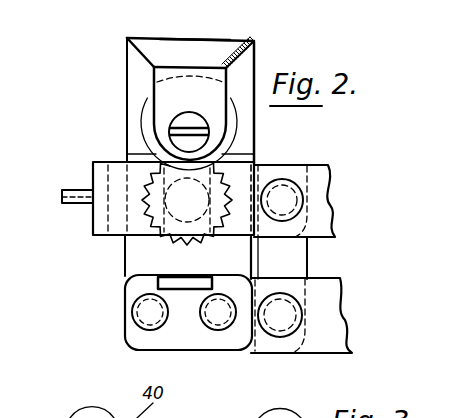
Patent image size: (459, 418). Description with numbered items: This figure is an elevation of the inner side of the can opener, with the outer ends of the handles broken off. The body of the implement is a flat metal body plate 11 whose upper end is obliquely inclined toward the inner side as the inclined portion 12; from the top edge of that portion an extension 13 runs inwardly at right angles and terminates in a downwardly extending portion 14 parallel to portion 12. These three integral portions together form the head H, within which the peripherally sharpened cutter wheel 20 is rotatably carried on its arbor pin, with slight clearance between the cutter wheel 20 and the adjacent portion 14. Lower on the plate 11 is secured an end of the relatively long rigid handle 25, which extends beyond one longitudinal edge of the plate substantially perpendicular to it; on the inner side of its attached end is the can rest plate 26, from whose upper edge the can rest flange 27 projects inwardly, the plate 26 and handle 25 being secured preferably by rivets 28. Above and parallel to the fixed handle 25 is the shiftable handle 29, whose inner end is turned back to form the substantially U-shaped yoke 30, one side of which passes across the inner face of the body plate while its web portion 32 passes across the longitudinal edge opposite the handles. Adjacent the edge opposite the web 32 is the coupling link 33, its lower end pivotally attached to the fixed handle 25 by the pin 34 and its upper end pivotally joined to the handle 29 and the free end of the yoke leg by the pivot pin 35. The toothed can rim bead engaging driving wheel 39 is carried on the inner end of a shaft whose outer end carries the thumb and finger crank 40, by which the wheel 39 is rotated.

The head H is at (210, 35).
The body plate 11 is at (138, 260).
The inclined portion 12 is at (254, 127).
The extension 13 is at (232, 47).
The downwardly extending portion 14 is at (160, 79).
The cutter wheel 20 is at (148, 111).
The rigid handle 25 is at (328, 327).
The can rest plate 26 is at (173, 337).
The can rest flange 27 is at (158, 282).
The rivets 28 is at (147, 317).
The shiftable handle 29 is at (326, 218).
The yoke 30 is at (96, 160).
The web portion 32 is at (93, 222).
The coupling link 33 is at (298, 257).
The pin 34 is at (287, 310).
The pivot pin 35 is at (284, 190).
The driving wheel 39 is at (160, 218).
The thumb and finger crank 40 is at (72, 190).